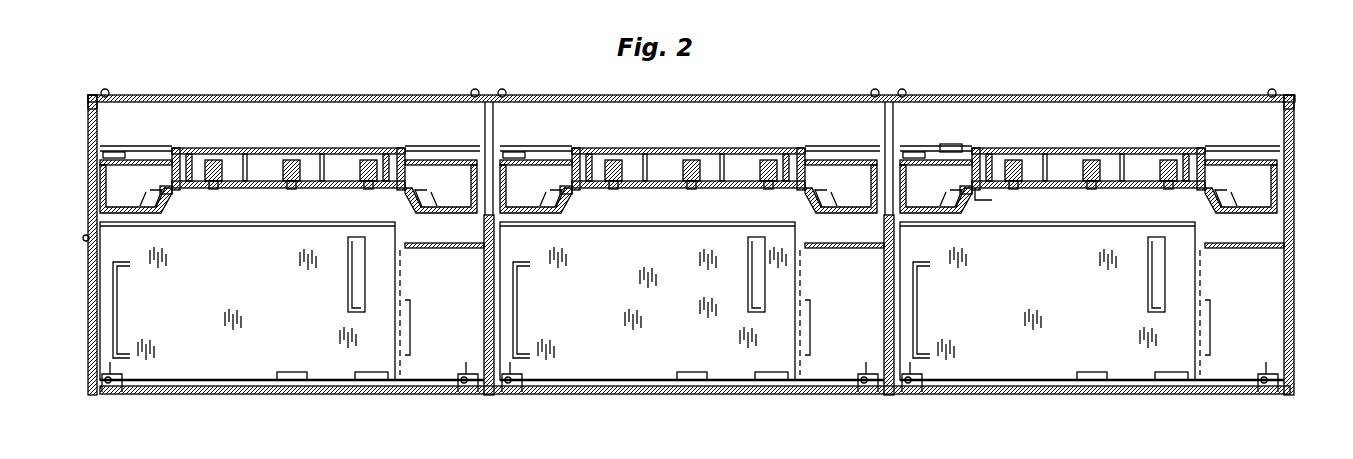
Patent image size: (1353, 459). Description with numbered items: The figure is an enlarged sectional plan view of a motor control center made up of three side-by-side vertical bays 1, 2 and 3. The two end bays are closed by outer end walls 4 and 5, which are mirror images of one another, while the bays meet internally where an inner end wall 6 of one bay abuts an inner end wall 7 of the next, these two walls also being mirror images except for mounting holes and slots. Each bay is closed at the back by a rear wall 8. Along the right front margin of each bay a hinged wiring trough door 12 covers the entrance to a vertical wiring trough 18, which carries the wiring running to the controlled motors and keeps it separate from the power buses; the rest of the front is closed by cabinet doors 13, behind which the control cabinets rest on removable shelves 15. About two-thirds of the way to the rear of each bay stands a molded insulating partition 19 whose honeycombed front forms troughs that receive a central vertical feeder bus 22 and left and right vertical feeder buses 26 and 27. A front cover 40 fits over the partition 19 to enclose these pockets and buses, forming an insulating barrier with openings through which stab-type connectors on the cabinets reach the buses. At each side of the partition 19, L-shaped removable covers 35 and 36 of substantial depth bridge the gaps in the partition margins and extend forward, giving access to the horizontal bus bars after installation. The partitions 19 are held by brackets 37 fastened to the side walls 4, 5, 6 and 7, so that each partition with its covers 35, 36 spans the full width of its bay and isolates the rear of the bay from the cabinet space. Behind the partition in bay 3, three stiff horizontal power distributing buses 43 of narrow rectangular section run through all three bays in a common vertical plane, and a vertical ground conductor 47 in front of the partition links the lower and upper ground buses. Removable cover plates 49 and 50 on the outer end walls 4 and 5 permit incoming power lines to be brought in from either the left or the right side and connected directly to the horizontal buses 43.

The vertical bay 1 is at (205, 403).
The vertical bay 2 is at (630, 397).
The vertical bay 3 is at (1025, 397).
The outer end wall 4 is at (95, 290).
The outer end wall 5 is at (1294, 287).
The inner end wall 6 is at (483, 310).
The inner end wall 7 is at (490, 330).
The rear wall 8 is at (345, 95).
The wiring trough door 12 is at (448, 396).
The cabinet door 13 is at (333, 394).
The removable shelf 15 is at (276, 283).
The vertical wiring trough 18 is at (466, 303).
The insulating partition 19 is at (258, 147).
The vertical feeder bus 22 is at (292, 160).
The left hand vertical feeder bus 26 is at (213, 158).
The right hand vertical feeder bus 27 is at (368, 160).
The removable cover 35 is at (166, 200).
The removable cover 36 is at (446, 207).
The bracket 37 is at (100, 190).
The front cover 40 is at (316, 191).
The horizontal power distributing bus 43 is at (950, 148).
The vertical ground conductor 47 is at (990, 202).
The removable cover plate 49 is at (86, 127).
The removable cover plate 50 is at (1294, 133).